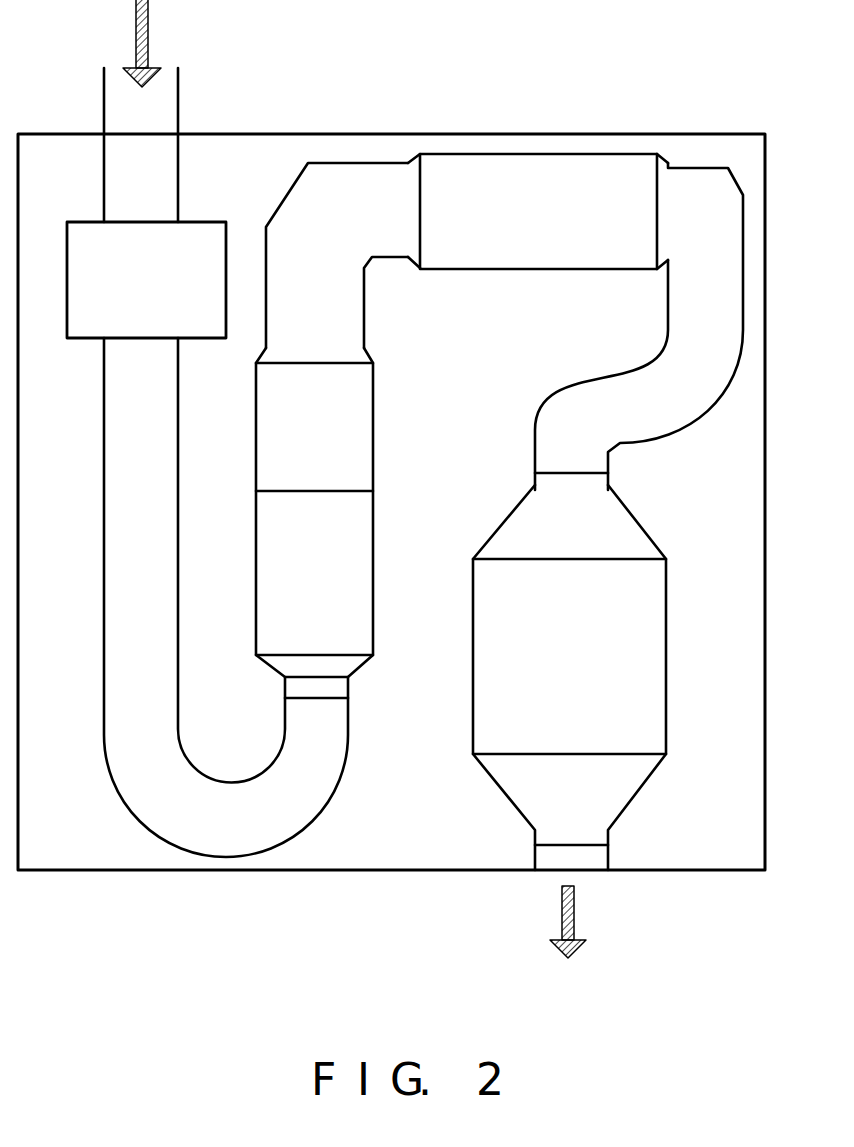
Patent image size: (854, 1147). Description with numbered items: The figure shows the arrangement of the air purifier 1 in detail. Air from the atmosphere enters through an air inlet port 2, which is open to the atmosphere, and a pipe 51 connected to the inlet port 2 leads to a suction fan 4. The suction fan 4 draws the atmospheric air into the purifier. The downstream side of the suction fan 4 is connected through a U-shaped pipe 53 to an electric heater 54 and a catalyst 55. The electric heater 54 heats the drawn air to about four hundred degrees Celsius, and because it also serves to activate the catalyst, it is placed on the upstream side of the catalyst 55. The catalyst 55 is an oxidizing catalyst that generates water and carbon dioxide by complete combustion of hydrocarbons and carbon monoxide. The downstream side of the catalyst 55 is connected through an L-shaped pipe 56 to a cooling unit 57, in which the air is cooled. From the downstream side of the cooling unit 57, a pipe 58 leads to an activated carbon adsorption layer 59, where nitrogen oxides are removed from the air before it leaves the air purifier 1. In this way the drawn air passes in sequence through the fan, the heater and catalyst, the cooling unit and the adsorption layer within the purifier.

The air purifier 1 is at (690, 131).
The air inlet port 2 is at (178, 92).
The suction fan 4 is at (97, 340).
The pipe 51 is at (104, 180).
The U-shaped pipe 53 is at (104, 586).
The electric heater 54 is at (373, 588).
The catalyst 55 is at (373, 443).
The L-shaped pipe 56 is at (300, 196).
The cooling unit 57 is at (520, 270).
The pipe 58 is at (695, 397).
The activated carbon adsorption layer 59 is at (655, 720).